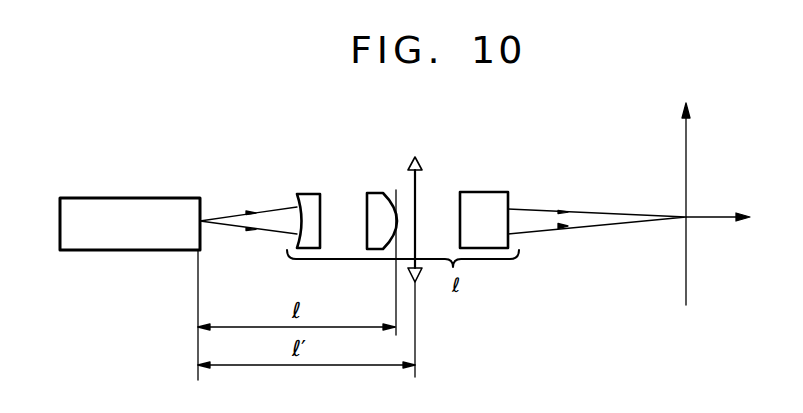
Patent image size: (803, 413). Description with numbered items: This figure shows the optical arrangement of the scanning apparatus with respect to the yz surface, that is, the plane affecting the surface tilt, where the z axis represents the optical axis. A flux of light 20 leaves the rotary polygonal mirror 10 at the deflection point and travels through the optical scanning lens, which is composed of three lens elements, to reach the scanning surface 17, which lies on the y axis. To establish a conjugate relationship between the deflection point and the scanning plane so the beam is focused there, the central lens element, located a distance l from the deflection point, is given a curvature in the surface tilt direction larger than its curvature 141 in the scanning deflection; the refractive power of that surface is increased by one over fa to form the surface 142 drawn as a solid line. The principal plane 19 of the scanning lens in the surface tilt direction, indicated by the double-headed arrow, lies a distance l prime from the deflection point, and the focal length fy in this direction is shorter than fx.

The rotary polygonal mirror 10 is at (139, 198).
The flux of light 20 is at (232, 215).
The curvature in the scanning deflection 141 is at (398, 192).
The surface 142 is at (378, 193).
The principal plane in the surface tilt direction 19 is at (424, 161).
The scanning surface 17 is at (688, 282).